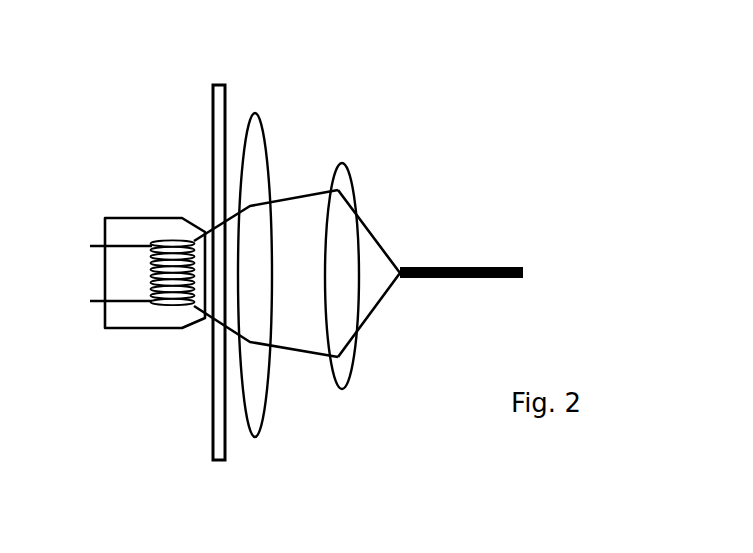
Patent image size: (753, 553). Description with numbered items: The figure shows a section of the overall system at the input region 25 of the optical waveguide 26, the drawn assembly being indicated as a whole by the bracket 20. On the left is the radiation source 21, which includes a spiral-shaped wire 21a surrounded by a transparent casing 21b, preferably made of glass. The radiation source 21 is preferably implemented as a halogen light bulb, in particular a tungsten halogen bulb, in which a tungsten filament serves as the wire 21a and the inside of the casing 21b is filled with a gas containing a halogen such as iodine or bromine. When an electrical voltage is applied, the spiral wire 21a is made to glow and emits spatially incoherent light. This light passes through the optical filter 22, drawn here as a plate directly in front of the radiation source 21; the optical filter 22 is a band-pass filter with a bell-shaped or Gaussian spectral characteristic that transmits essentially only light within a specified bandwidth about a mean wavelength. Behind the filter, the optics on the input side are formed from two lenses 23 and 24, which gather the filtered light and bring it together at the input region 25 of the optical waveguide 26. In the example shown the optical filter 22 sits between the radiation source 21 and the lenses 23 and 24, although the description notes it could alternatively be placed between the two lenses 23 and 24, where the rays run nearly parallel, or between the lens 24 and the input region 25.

The light source unit 20 is at (228, 68).
The radiation source 21 is at (148, 318).
The spiral-shaped wire 21a is at (170, 240).
The transparent casing 21b is at (112, 330).
The optical filter 22 is at (215, 445).
The lens 23 is at (255, 138).
The lens 24 is at (340, 178).
The input region 25 is at (404, 263).
The optical waveguide 26 is at (505, 265).